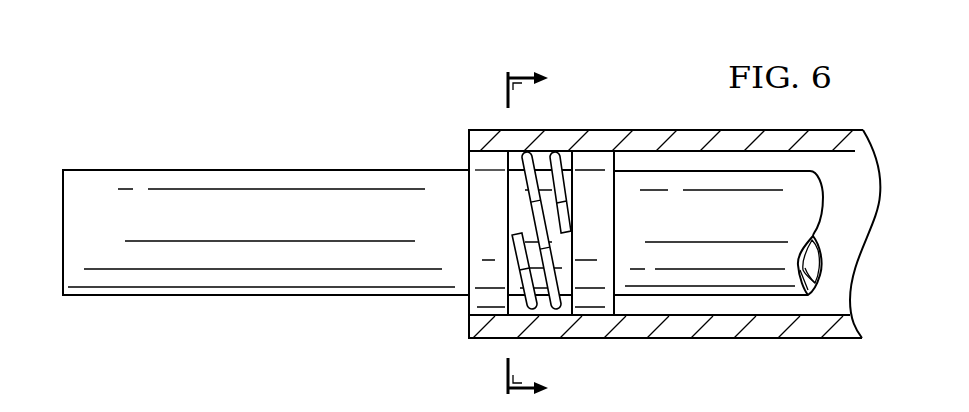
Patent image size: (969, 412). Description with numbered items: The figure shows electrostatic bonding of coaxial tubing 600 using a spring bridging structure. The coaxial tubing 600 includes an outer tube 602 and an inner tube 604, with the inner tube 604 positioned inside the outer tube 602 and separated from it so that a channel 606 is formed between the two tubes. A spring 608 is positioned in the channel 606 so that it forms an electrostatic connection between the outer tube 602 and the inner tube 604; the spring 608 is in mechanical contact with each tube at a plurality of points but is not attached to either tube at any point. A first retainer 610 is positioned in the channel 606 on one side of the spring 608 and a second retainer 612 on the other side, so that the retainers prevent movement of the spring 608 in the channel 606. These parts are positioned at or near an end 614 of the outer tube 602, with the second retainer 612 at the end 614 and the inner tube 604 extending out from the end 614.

The coaxial tubing 600 is at (333, 63).
The outer tube 602 is at (815, 338).
The inner tube 604 is at (737, 297).
The channel 606 is at (655, 302).
The spring 608 is at (528, 183).
The first retainer 610 is at (607, 222).
The second retainer 612 is at (476, 158).
The end 614 is at (469, 322).